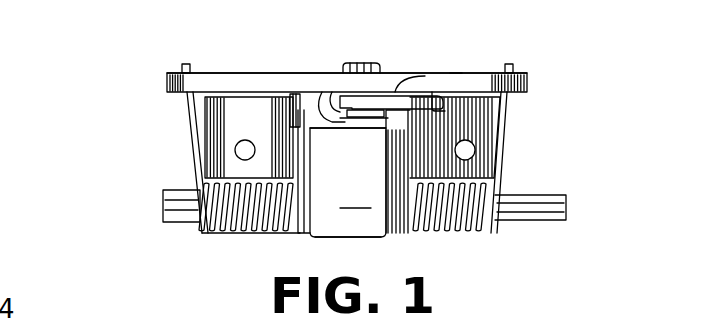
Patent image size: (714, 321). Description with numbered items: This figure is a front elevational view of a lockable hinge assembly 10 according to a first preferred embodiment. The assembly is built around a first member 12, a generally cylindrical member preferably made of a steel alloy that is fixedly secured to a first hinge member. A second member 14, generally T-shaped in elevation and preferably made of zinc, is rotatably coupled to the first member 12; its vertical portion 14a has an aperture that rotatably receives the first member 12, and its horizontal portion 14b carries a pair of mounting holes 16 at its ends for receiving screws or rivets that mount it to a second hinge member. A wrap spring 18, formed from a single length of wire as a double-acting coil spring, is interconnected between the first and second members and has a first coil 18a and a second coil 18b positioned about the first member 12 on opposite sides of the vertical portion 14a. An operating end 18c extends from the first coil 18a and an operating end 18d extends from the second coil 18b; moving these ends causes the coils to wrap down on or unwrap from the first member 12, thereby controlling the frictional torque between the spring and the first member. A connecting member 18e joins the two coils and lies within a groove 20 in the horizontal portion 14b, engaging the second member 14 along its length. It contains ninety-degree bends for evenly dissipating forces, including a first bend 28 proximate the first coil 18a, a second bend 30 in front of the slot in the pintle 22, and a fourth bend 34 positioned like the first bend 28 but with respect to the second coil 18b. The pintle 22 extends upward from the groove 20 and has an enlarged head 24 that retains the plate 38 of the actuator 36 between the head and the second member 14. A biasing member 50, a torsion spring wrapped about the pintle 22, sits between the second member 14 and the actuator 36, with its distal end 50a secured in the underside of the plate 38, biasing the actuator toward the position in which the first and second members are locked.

The lockable hinge assembly 10 is at (562, 42).
The first member 12 is at (566, 220).
The second member 14 is at (360, 173).
The vertical portion 14a is at (350, 236).
The horizontal portion 14b is at (233, 100).
The mounting holes 16 is at (243, 150).
The wrap spring 18 is at (260, 255).
The first coil 18a is at (231, 232).
The second coil 18b is at (480, 232).
The operating end 18c is at (190, 106).
The operating end 18d is at (500, 115).
The connecting member 18e is at (323, 92).
The groove 20 is at (300, 232).
The pintle 22 is at (412, 92).
The head 24 is at (382, 95).
The first ninety-degree bend 28 is at (290, 94).
The second ninety-degree bend 30 is at (348, 149).
The fourth ninety-degree bend 34 is at (462, 73).
The actuator 36 is at (530, 72).
The plate 38 is at (205, 85).
The biasing member 50 is at (362, 63).
The distal end 50a is at (432, 94).